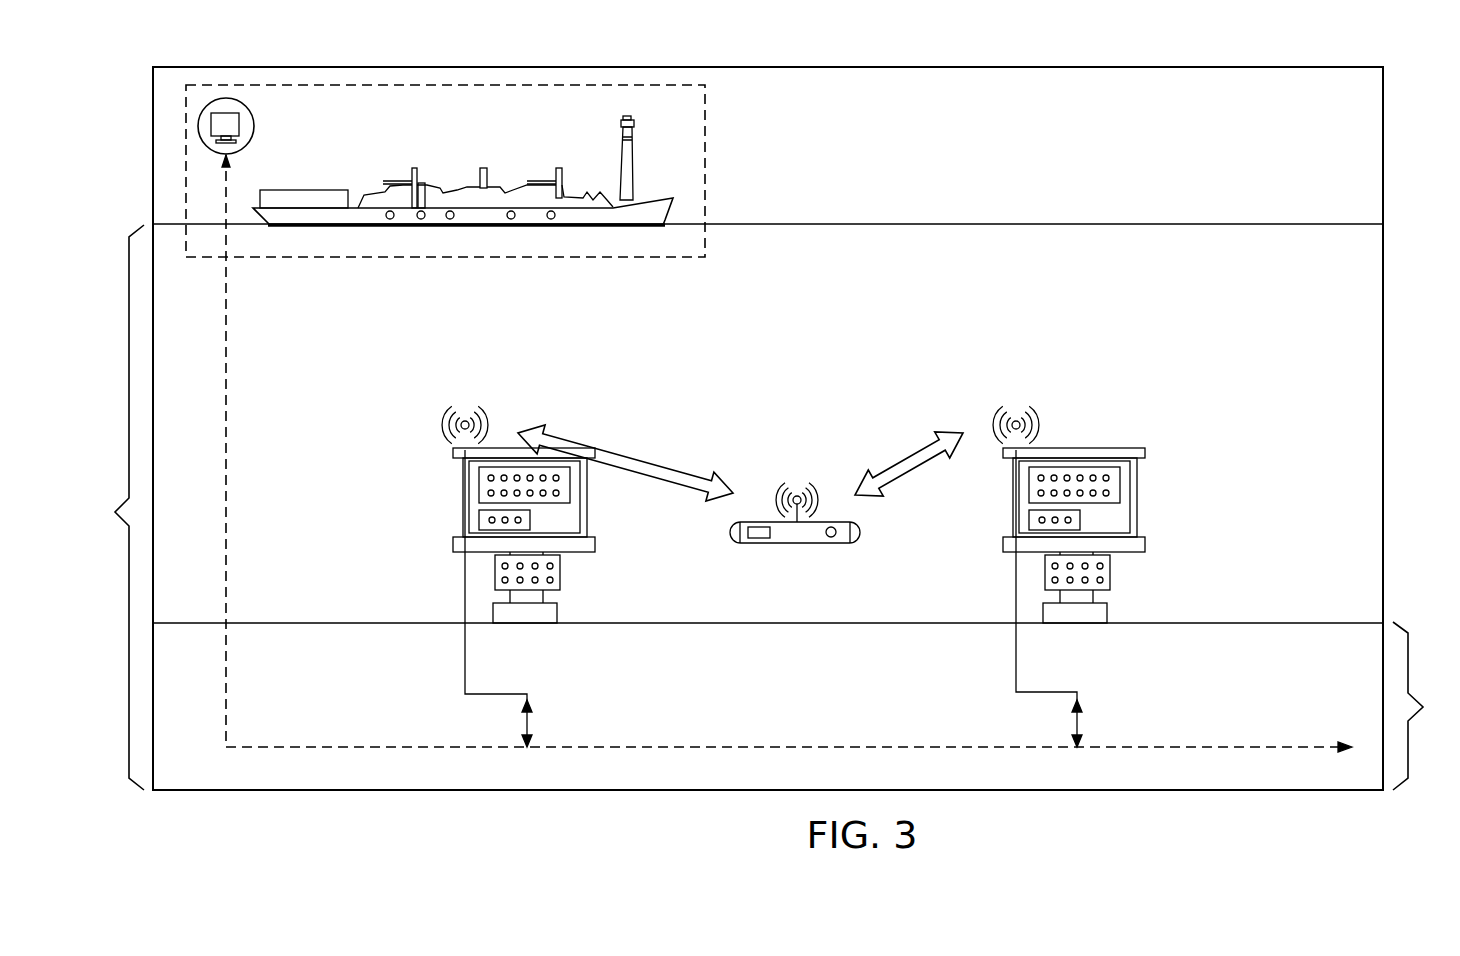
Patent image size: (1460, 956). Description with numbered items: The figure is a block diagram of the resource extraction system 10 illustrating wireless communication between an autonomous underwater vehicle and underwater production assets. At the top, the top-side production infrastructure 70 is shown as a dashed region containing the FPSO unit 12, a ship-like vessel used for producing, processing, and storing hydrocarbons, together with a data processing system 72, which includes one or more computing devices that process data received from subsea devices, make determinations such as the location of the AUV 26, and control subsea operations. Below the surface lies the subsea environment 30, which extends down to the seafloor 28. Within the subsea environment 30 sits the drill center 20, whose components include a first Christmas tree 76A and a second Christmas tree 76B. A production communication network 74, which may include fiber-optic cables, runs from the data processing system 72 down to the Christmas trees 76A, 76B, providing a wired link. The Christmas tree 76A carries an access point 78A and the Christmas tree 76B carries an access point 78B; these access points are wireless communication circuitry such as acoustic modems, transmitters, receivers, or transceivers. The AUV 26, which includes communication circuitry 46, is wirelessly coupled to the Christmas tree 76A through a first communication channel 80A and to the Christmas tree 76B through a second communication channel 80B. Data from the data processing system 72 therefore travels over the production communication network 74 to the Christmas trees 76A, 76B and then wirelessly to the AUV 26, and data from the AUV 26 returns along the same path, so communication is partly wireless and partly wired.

The resource extraction system 10 is at (1403, 100).
The FPSO unit 12 is at (538, 100).
The drill center 20 is at (888, 345).
The AUV 26 is at (752, 544).
The seafloor 28 is at (1426, 706).
The subsea environment 30 is at (111, 507).
The communication circuitry 46 is at (800, 470).
The top-side production infrastructure 70 is at (706, 167).
The data processing system 72 is at (228, 80).
The production communication network 74 is at (325, 748).
The Christmas tree 76A is at (388, 518).
The Christmas tree 76B is at (1198, 510).
The access point 78A is at (469, 390).
The access point 78B is at (1019, 400).
The first communication channel 80A is at (623, 473).
The second communication channel 80B is at (912, 480).